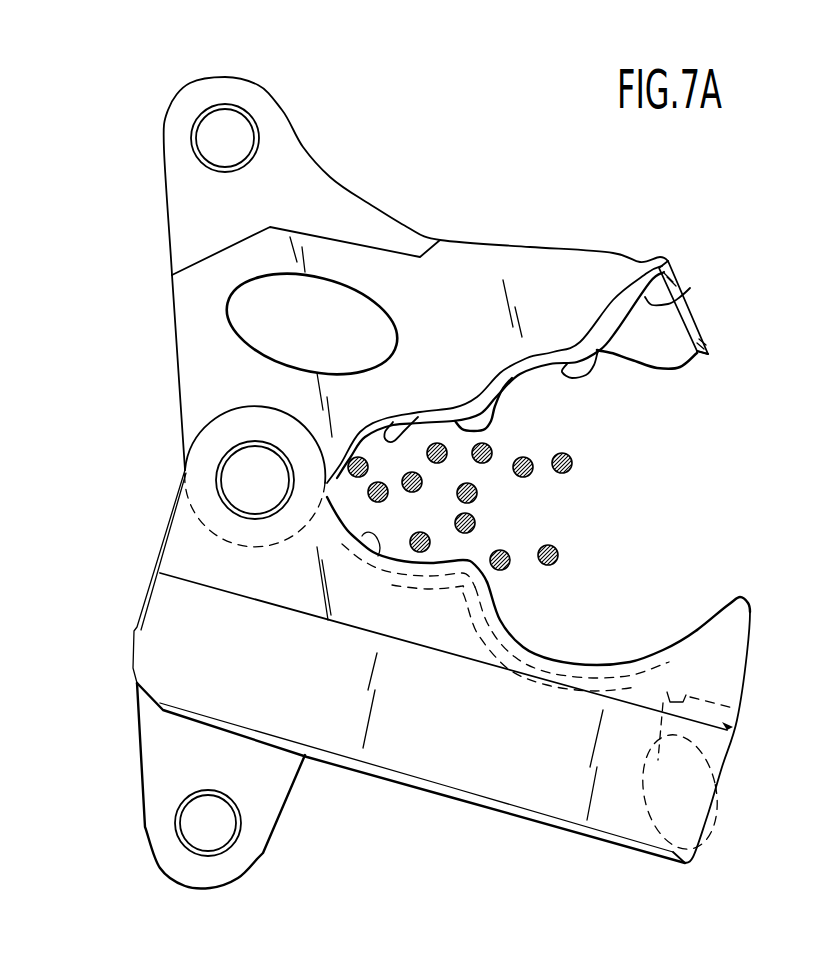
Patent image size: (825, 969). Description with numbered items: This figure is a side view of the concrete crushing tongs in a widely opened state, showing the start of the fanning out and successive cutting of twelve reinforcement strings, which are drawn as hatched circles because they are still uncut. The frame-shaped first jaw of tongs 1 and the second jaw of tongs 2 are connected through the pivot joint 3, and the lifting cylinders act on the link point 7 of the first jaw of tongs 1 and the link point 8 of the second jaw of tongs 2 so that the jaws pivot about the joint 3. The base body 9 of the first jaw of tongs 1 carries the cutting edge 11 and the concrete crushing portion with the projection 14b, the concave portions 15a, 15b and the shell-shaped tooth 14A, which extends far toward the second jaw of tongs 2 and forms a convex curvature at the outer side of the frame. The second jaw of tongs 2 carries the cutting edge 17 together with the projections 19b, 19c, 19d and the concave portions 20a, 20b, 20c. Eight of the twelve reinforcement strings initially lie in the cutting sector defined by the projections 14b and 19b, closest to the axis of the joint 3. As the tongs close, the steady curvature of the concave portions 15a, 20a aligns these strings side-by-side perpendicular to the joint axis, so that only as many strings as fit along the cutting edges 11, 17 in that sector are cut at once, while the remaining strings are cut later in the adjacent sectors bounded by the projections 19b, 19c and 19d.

The first jaw of tongs 1 is at (562, 830).
The second jaw of tongs 2 is at (532, 246).
The pivot joint 3 is at (252, 470).
The link point 7 is at (218, 823).
The link point 8 is at (228, 133).
The base body 9 is at (299, 586).
The cutting edge 11 is at (500, 643).
The tooth 14A is at (733, 617).
The projection 14b is at (470, 557).
The concave portion 15a is at (378, 556).
The concave portion 15b is at (568, 653).
The cutting edge 17 is at (574, 336).
The projection 19b is at (490, 428).
The projection 19c is at (597, 372).
The projection 19d is at (682, 370).
The concave portion 20a is at (404, 430).
The concave portion 20b is at (533, 370).
The concave portion 20c is at (678, 300).